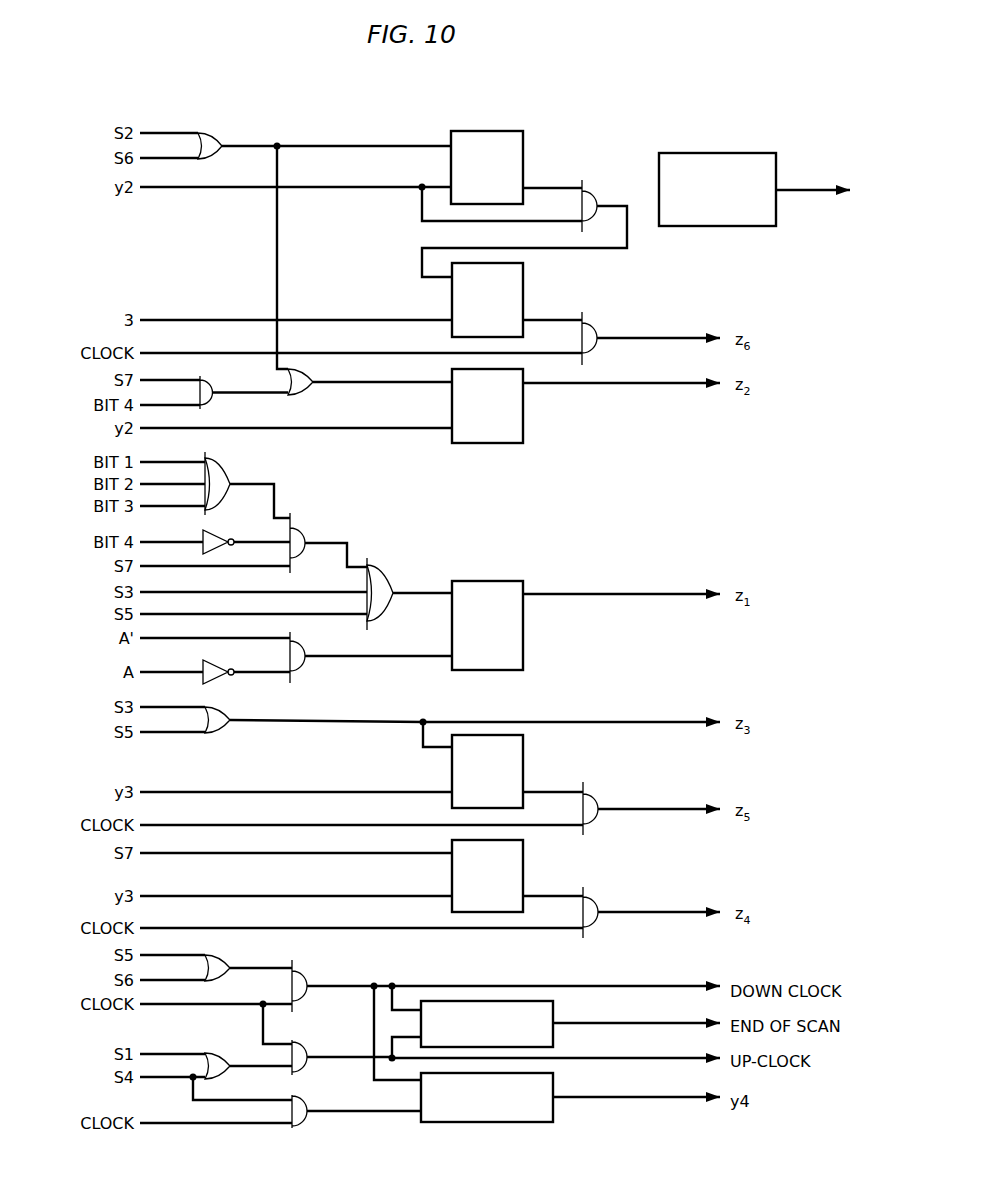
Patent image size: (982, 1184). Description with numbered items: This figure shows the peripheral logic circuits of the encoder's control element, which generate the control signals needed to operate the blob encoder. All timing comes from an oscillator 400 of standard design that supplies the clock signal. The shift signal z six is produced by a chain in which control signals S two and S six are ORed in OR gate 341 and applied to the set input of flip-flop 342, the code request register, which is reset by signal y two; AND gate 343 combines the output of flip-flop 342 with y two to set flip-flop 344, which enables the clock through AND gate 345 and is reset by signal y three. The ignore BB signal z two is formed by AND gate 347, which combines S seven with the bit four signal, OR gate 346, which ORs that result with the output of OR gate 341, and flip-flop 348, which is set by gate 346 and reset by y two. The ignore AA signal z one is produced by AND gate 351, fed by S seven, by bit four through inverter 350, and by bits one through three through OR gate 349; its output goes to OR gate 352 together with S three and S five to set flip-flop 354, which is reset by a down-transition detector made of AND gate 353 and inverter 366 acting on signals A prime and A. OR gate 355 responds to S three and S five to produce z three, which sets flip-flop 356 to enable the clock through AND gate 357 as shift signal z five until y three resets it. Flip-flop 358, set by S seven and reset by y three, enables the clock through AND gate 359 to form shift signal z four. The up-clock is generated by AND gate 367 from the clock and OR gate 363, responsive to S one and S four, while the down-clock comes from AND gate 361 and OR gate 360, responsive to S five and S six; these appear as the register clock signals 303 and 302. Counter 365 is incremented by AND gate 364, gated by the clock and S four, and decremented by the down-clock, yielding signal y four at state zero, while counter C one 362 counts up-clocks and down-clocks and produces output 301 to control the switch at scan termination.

The OR gate 341 is at (220, 131).
The flip-flop 342 is at (523, 140).
The AND gate 343 is at (593, 191).
The flip-flop 344 is at (523, 270).
The AND gate 345 is at (593, 322).
The OR gate 346 is at (309, 378).
The AND gate 347 is at (214, 380).
The flip-flop 348 is at (523, 405).
The OR gate 349 is at (222, 467).
The inverter 350 is at (221, 527).
The AND gate 351 is at (307, 527).
The OR gate 352 is at (382, 570).
The AND gate 353 is at (307, 641).
The flip-flop 354 is at (480, 581).
The OR gate 355 is at (222, 707).
The flip-flop 356 is at (523, 748).
The AND gate 357 is at (593, 797).
The flip-flop 358 is at (523, 854).
The AND gate 359 is at (593, 901).
The OR gate 360 is at (222, 955).
The AND gate 361 is at (307, 972).
The counter C1 362 is at (558, 1007).
The OR gate 363 is at (221, 1050).
The AND gate 364 is at (307, 1090).
The counter 365 is at (558, 1078).
The inverter 366 is at (221, 662).
The AND gate 367 is at (307, 1035).
The oscillator 400 is at (730, 153).
The line 301 is at (653, 1022).
The shift-right/shift-left clock signal 302 is at (653, 986).
The shift-right/shift-left clock signal 303 is at (653, 1057).